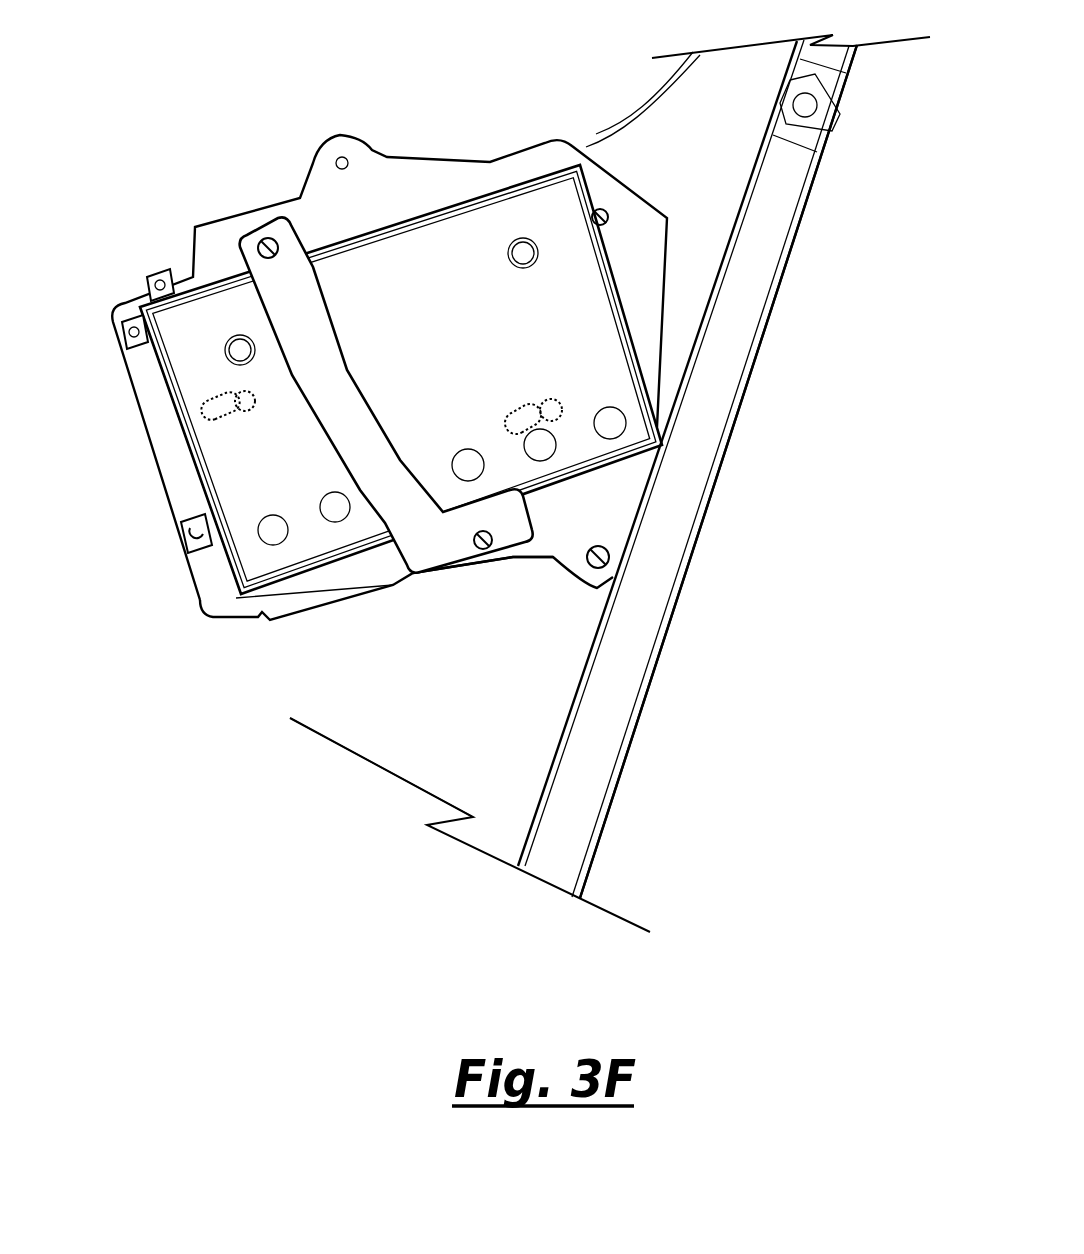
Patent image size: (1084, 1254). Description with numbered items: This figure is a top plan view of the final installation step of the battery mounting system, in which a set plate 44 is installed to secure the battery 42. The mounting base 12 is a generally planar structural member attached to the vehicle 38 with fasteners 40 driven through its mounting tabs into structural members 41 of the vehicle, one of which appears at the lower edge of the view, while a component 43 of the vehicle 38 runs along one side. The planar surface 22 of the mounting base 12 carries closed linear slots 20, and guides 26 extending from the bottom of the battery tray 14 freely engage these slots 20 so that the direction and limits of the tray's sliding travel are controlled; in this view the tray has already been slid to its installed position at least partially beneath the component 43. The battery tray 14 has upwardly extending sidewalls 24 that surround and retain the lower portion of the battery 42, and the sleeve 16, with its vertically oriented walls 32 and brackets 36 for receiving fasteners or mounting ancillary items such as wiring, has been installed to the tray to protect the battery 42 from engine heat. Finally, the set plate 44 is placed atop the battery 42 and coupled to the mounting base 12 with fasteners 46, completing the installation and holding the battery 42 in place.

The mounting base 12 is at (277, 204).
The battery tray 14 is at (365, 380).
The sleeve 16 is at (173, 402).
The linear slots 20 is at (215, 420).
The planar surface 22 is at (583, 542).
The sidewalls 24 is at (368, 237).
The guide 26 is at (213, 403).
The walls 32 is at (185, 293).
The bracket 36 is at (145, 283).
The vehicle 38 is at (850, 349).
The fasteners 40 is at (613, 205).
The structural members 41 is at (500, 729).
The battery 42 is at (230, 477).
The component 43 is at (698, 533).
The set plate 44 is at (237, 238).
The fasteners 46 is at (266, 240).